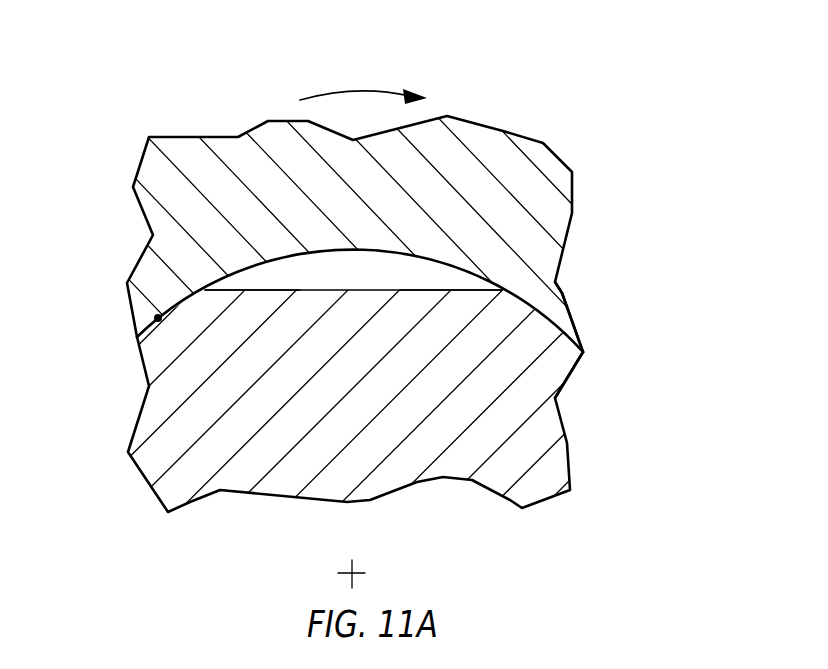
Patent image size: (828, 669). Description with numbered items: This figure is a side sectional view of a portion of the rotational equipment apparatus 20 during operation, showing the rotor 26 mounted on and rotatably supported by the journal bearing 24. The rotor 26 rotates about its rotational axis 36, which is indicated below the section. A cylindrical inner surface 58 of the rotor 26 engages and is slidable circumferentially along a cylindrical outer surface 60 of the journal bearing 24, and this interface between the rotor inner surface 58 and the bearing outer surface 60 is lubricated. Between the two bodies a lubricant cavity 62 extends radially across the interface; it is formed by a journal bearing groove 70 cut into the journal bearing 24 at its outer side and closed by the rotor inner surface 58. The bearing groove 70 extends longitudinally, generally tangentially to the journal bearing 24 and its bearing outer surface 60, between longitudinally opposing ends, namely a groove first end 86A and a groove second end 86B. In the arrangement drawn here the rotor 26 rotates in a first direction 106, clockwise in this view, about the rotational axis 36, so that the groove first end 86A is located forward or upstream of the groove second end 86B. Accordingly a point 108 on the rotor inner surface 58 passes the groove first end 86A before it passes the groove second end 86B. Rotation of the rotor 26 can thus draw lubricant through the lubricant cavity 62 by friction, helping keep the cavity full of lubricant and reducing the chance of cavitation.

The rotational equipment apparatus 20 is at (385, 297).
The journal bearing 24 is at (576, 458).
The rotor 26 is at (578, 197).
The rotational axis 36 is at (353, 573).
The rotor inner surface 58 is at (563, 344).
The bearing outer surface 60 is at (560, 325).
The lubricant cavity 62 is at (353, 243).
The journal bearing groove 70 is at (408, 278).
The groove first end 86A is at (205, 290).
The groove second end 86B is at (500, 293).
The first direction 106 is at (362, 92).
The point 108 is at (158, 318).